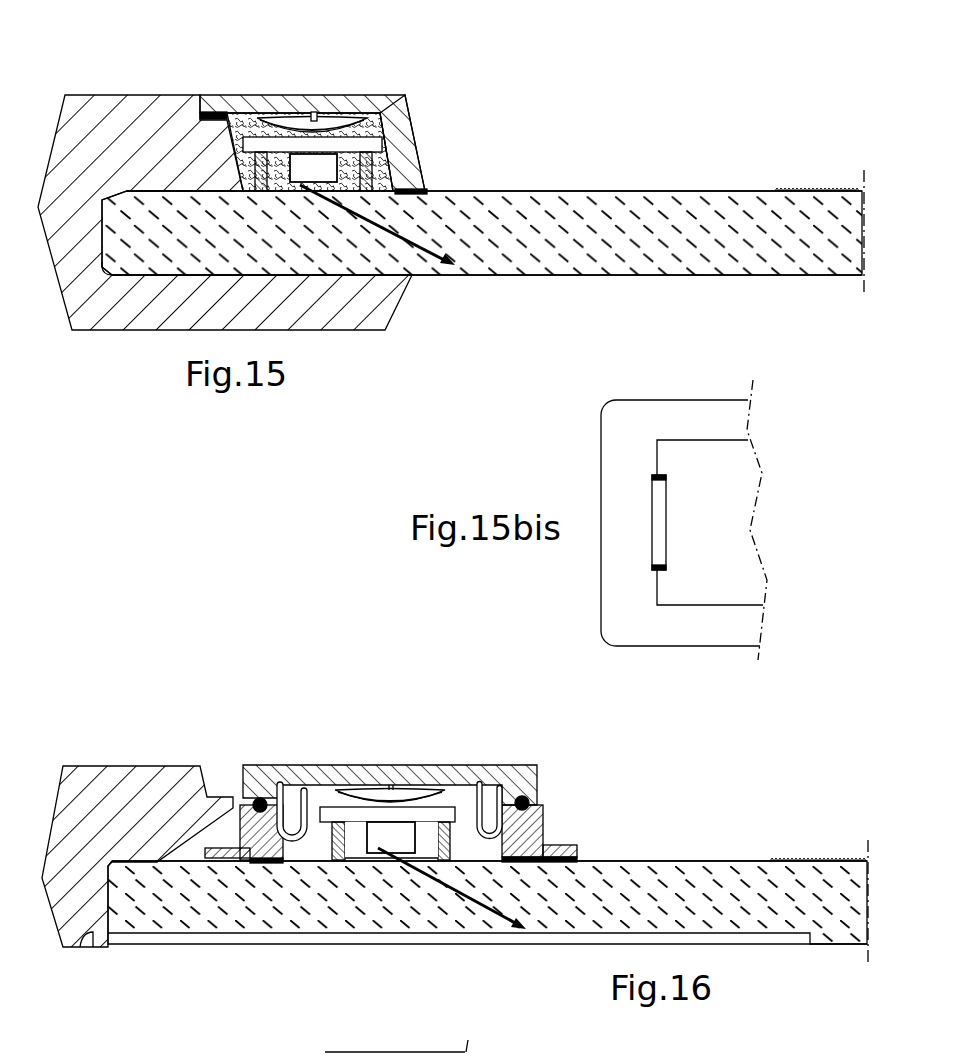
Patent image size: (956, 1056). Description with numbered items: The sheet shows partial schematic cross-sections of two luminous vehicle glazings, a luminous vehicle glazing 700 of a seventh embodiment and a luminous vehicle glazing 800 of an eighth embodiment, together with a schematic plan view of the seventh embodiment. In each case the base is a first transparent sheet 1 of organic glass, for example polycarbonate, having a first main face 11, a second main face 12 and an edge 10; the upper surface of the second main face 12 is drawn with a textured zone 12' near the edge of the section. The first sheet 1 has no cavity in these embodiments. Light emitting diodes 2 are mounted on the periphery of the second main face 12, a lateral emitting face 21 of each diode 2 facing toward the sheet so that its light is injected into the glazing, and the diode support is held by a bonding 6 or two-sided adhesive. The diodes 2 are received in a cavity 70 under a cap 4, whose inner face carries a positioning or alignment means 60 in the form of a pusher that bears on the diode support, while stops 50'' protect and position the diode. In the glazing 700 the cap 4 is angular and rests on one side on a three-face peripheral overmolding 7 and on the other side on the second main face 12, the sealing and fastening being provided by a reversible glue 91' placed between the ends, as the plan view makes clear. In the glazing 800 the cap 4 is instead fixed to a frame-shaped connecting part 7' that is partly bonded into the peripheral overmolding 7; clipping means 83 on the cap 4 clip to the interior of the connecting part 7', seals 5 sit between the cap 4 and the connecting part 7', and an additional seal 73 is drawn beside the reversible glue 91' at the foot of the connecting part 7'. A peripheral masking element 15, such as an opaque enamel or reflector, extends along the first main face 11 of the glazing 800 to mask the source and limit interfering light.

In FIG. 15, the luminous vehicle glazing 700 is at (558, 100).
In FIG. 16, the luminous vehicle glazing 800 is at (201, 706).
In FIG. 15, the peripheral overmolding 7 is at (225, 179).
In FIG. 15bis, the peripheral overmolding 7 is at (680, 551).
In FIG. 16, the peripheral overmolding 7 is at (137, 826).
In FIG. 16, the connecting part 7' is at (542, 795).
In FIG. 15, the edge 10 is at (102, 260).
In FIG. 16, the edge 10 is at (85, 948).
In FIG. 15, the first transparent sheet 1 is at (655, 190).
In FIG. 15bis, the first transparent sheet 1 is at (697, 450).
In FIG. 16, the first transparent sheet 1 is at (700, 862).
In FIG. 15, the first main face 11 is at (535, 277).
In FIG. 16, the first main face 11 is at (820, 948).
In FIG. 15, the second main face 12 is at (494, 153).
In FIG. 16, the second main face 12 is at (489, 824).
In FIG. 15, the knurled zone of upper face 12' is at (817, 159).
In FIG. 16, the knurled zone of upper face 12' is at (818, 827).
In FIG. 16, the peripheral masking element 15 is at (425, 946).
In FIG. 15, the cap 4 is at (403, 108).
In FIG. 15bis, the cap 4 is at (655, 548).
In FIG. 16, the cap 4 is at (281, 790).
In FIG. 16, the O-ring seal 5 is at (260, 797).
In FIG. 15, the bonding 6 is at (385, 112).
In FIG. 16, the bonding 6 is at (310, 784).
In FIG. 16, the clipping means 83 is at (487, 795).
In FIG. 16, the seal ring 73 is at (570, 848).
In FIG. 15, the reversible glue 91' is at (305, 113).
In FIG. 15bis, the reversible glue 91' is at (604, 512).
In FIG. 16, the reversible glue 91' is at (421, 805).
In FIG. 15, the stops 50'' is at (359, 151).
In FIG. 16, the stops 50'' is at (370, 870).
In FIG. 15, the cavity 70 is at (283, 114).
In FIG. 16, the cavity 70 is at (375, 790).
In FIG. 15, the positioning/alignment means 60 is at (335, 129).
In FIG. 16, the positioning/alignment means 60 is at (388, 800).
In FIG. 15, the light emitting diodes 2 is at (304, 152).
In FIG. 16, the light emitting diodes 2 is at (420, 815).
In FIG. 15, the emitting face 21 is at (240, 168).
In FIG. 16, the emitting face 21 is at (392, 838).